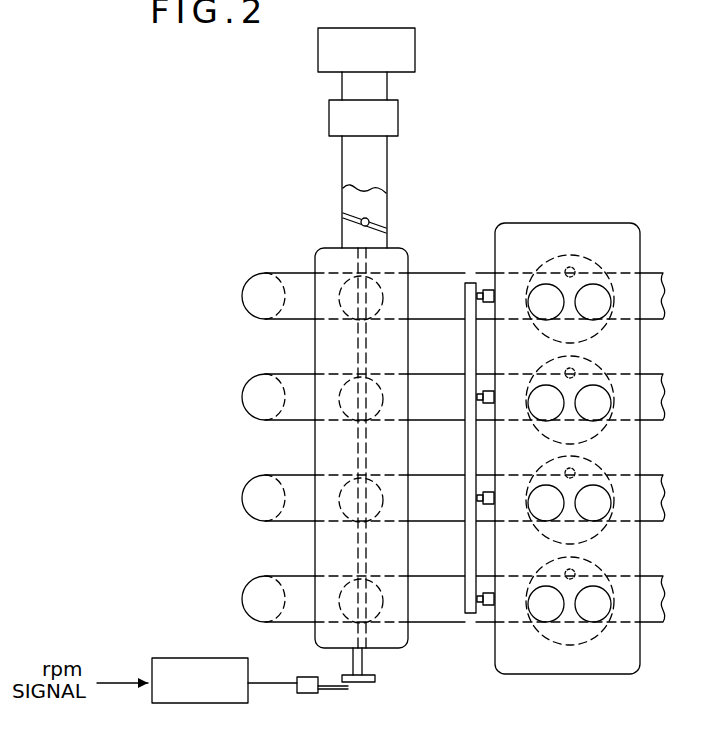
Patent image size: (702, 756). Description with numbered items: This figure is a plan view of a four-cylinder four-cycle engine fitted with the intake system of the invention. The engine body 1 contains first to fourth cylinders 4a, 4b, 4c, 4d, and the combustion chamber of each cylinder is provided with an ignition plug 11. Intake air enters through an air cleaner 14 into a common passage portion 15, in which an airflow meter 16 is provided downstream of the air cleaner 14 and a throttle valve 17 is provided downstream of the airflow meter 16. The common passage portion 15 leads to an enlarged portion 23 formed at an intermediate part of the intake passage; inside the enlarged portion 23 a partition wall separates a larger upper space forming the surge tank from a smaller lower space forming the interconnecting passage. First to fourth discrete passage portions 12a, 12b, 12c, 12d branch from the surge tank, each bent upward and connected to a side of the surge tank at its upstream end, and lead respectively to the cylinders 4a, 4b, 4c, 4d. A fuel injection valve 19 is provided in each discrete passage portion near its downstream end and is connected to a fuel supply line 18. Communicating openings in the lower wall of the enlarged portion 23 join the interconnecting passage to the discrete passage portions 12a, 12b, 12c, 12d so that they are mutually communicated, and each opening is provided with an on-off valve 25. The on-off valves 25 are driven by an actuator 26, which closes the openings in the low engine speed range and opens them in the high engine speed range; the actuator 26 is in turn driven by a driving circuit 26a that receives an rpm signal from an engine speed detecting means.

The engine body 1 is at (613, 221).
The first cylinder 4a is at (607, 645).
The second cylinder 4b is at (605, 468).
The third cylinder 4c is at (603, 372).
The fourth cylinder 4d is at (603, 262).
The ignition plug 11 is at (571, 266).
The first discrete passage portion 12a is at (433, 623).
The second discrete passage portion 12b is at (433, 522).
The third discrete passage portion 12c is at (433, 421).
The fourth discrete passage portion 12d is at (433, 320).
The air cleaner 14 is at (415, 60).
The common passage portion 15 is at (373, 168).
The airflow meter 16 is at (398, 123).
The throttle valve 17 is at (378, 218).
The fuel supply line 18 is at (470, 613).
The fuel injection valve 19 is at (488, 293).
The enlarged portion 23 is at (323, 245).
The on-off valve 25 is at (383, 300).
The actuator 26 is at (303, 693).
The driving circuit 26a is at (173, 658).